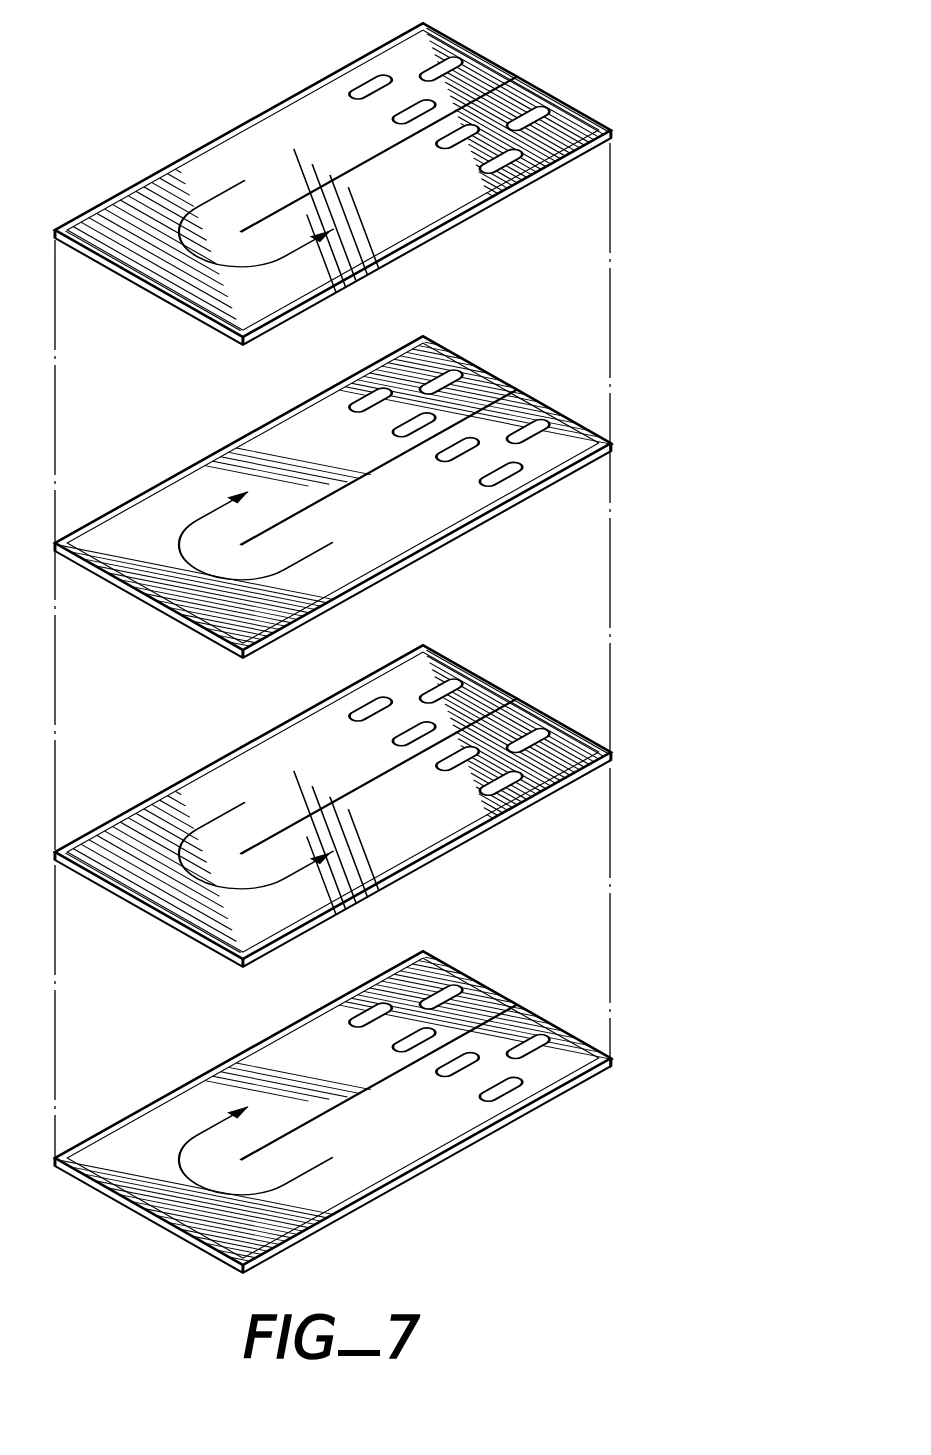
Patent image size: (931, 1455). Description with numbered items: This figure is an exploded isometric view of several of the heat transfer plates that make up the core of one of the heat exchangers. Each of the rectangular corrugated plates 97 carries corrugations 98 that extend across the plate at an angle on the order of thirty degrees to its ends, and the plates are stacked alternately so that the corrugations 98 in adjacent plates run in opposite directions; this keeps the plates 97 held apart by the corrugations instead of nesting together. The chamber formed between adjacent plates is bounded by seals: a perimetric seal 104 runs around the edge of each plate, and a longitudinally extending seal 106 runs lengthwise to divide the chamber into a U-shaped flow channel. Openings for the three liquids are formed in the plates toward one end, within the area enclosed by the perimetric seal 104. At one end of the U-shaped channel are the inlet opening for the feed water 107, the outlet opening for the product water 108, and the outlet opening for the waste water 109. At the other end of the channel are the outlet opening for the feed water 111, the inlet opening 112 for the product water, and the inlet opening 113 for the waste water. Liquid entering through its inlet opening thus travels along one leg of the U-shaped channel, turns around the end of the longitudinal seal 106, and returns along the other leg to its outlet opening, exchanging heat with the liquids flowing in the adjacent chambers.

The corrugated plate 97 is at (210, 146).
The corrugations 98 is at (215, 468).
The perimetric seal 104 is at (150, 284).
The longitudinally extending seal 106 is at (357, 170).
The inlet opening for the feed water 107 is at (432, 60).
The outlet opening for the product water 108 is at (397, 112).
The outlet opening for the waste water 109 is at (357, 90).
The outlet opening for the feed water 111 is at (540, 1046).
The inlet opening for the product water 112 is at (447, 143).
The inlet opening for the waste water 113 is at (503, 163).